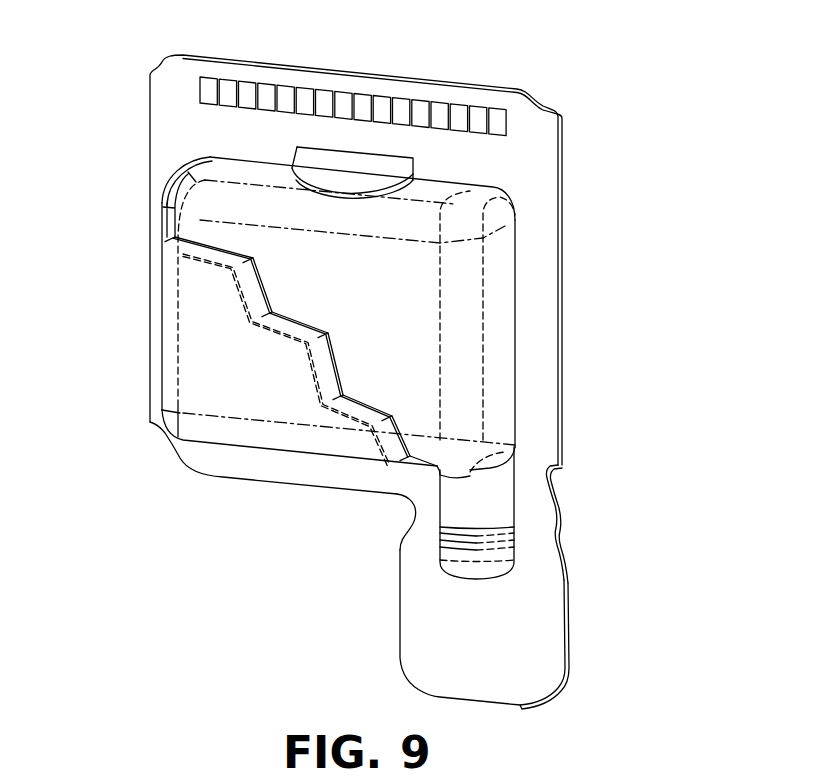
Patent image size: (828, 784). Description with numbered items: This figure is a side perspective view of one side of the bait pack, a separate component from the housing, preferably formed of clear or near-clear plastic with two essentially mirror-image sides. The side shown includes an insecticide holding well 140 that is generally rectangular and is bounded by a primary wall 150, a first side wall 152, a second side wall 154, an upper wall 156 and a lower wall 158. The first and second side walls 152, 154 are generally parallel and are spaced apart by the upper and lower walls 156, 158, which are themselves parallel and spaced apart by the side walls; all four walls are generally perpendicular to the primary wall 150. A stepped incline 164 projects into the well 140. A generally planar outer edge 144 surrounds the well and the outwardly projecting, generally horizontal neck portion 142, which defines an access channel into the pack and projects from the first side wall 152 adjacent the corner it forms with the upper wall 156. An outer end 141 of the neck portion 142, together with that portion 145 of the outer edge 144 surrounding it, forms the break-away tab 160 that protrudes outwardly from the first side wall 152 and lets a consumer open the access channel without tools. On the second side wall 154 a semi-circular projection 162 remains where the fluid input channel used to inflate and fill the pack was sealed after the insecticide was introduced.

The insecticide holding well 140 is at (460, 308).
The outer end of the neck portion 141 is at (460, 553).
The neck portion 142 is at (540, 495).
The outer edge 144 is at (540, 172).
The portion of the outer edge surrounding the outer end 145 is at (418, 550).
The primary wall 150 is at (353, 285).
The first side wall 152 is at (281, 450).
The second side wall 154 is at (264, 174).
The upper wall 156 is at (503, 385).
The lower wall 158 is at (157, 296).
The break-away tab 160 is at (532, 573).
The semi-circular projection 162 is at (380, 167).
The stepped incline 164 is at (299, 321).